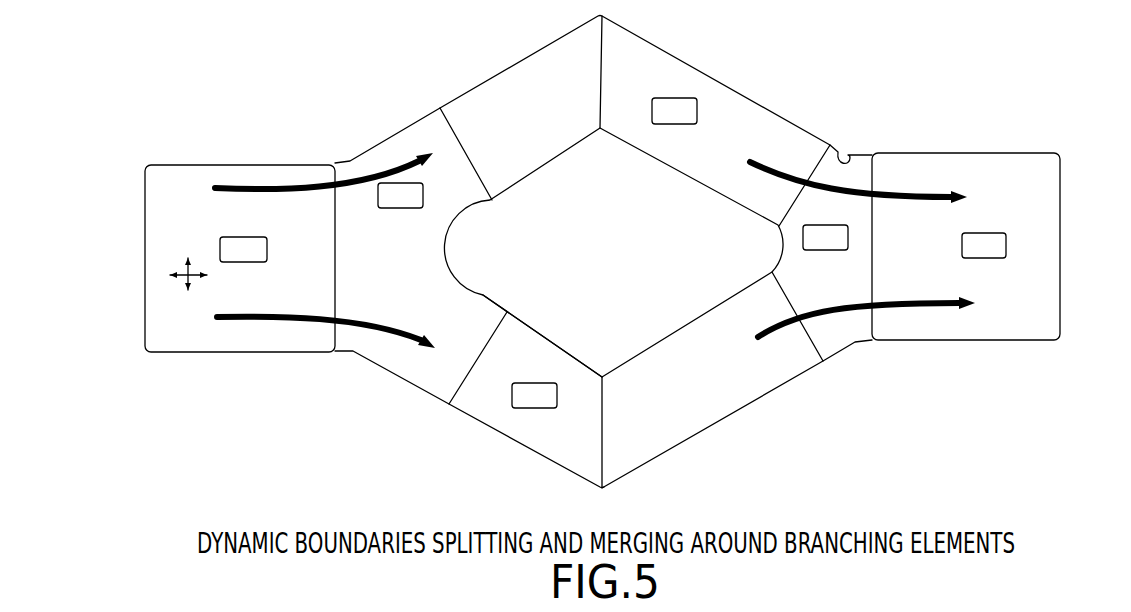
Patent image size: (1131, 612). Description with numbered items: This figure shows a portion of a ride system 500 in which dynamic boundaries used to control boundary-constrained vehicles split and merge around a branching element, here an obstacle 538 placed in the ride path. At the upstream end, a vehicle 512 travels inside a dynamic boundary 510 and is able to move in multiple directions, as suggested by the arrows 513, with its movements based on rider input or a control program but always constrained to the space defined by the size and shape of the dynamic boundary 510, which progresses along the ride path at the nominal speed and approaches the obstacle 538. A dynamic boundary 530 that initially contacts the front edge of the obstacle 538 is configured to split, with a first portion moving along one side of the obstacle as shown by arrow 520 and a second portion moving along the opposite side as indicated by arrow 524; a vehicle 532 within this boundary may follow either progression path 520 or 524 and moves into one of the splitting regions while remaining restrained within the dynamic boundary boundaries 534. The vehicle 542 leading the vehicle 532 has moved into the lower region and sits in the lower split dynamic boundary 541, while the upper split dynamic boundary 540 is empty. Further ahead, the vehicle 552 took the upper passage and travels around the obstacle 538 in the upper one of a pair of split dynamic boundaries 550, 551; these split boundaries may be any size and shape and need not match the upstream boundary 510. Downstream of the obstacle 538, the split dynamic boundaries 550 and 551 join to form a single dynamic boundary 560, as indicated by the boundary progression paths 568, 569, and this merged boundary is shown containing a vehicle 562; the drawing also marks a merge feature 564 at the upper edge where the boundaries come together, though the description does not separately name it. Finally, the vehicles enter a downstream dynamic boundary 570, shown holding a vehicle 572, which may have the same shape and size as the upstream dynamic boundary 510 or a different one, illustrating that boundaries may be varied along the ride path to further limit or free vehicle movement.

The ride system 500 is at (935, 88).
The dynamic boundary 510 is at (212, 372).
The vehicle 512 is at (248, 262).
The arrows 513 is at (193, 280).
The arrow 520 is at (268, 186).
The arrow 524 is at (278, 320).
The dynamic boundary 530 is at (413, 106).
The vehicle 532 is at (398, 208).
The dynamic boundary boundaries 534 is at (396, 372).
The obstacle 538 is at (467, 310).
The split dynamic boundary 540 is at (509, 54).
The split dynamic boundary 541 is at (507, 457).
The vehicle 542 is at (530, 408).
The split dynamic boundary 550 is at (713, 58).
The split dynamic boundary 551 is at (721, 448).
The vehicle 552 is at (680, 125).
The dynamic boundary 560 is at (857, 366).
The vehicle 562 is at (818, 250).
The upper merge boundary 564 is at (840, 150).
The boundary progression path 568 is at (887, 196).
The boundary progression path 569 is at (913, 305).
The dynamic boundary 570 is at (1064, 140).
The vehicle 572 is at (985, 258).